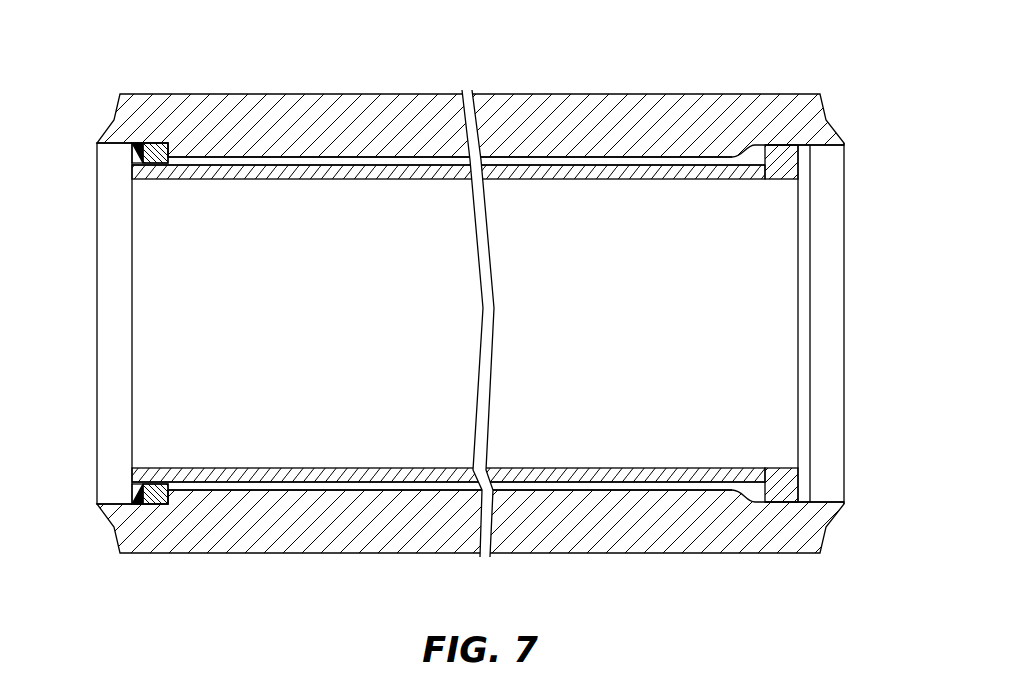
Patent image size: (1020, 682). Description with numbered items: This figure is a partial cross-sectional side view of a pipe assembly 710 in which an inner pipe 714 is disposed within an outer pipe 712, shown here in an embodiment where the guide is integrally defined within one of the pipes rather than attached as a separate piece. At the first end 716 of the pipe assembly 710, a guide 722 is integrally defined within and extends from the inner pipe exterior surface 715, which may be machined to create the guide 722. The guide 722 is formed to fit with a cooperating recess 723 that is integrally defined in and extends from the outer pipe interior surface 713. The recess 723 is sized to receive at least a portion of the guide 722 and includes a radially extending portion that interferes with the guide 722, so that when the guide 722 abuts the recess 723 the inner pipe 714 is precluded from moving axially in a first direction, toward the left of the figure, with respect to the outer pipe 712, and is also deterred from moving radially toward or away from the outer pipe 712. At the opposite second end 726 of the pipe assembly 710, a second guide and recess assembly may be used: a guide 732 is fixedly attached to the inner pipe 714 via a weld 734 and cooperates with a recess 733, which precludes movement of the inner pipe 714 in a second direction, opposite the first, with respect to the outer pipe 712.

The pipe assembly 710 is at (474, 308).
The outer pipe 712 is at (425, 123).
The outer pipe interior surface 713 is at (610, 153).
The inner pipe 714 is at (368, 170).
The inner pipe exterior surface 715 is at (682, 162).
The first end 716 is at (874, 123).
The guide 722 is at (782, 167).
The recess 723 is at (782, 145).
The second end 726 is at (78, 172).
The guide 732 is at (152, 167).
The recess 733 is at (151, 144).
The weld 734 is at (138, 161).